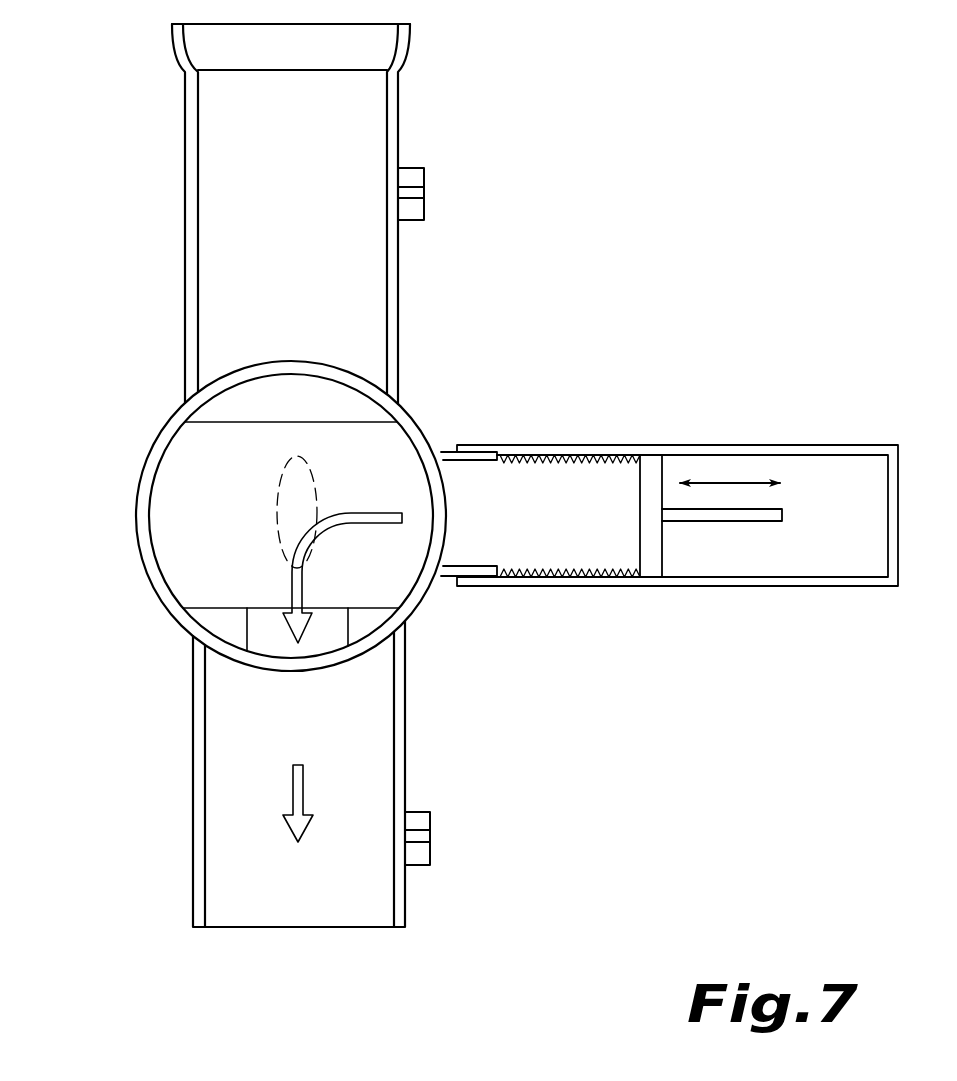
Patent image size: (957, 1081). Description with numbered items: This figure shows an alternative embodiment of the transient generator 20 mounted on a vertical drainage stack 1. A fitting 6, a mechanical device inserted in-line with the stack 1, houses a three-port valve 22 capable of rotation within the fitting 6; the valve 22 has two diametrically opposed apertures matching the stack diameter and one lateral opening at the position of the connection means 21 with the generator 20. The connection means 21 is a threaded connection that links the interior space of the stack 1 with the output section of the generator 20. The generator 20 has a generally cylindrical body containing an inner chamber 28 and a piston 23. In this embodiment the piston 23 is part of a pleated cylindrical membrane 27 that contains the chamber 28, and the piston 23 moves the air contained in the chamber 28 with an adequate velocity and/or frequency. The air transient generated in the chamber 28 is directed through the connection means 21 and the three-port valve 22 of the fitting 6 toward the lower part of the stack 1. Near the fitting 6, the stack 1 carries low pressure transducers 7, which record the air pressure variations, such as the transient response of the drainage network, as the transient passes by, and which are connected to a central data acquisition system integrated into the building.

The vertical stack 1 is at (97, 142).
The fitting 6 is at (142, 618).
The low pressure transducer 7 is at (437, 188).
The transient generator 20 is at (700, 615).
The connection means 21 is at (468, 530).
The three-port valve 22 is at (182, 465).
The piston 23 is at (652, 468).
The pleated cylindrical membrane 27 is at (608, 573).
The inner chamber 28 is at (600, 500).